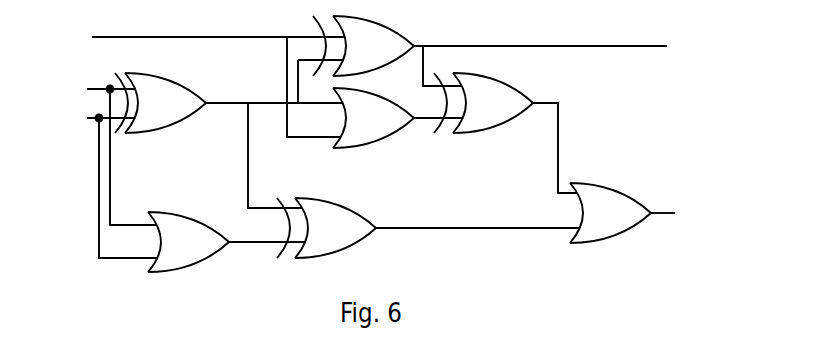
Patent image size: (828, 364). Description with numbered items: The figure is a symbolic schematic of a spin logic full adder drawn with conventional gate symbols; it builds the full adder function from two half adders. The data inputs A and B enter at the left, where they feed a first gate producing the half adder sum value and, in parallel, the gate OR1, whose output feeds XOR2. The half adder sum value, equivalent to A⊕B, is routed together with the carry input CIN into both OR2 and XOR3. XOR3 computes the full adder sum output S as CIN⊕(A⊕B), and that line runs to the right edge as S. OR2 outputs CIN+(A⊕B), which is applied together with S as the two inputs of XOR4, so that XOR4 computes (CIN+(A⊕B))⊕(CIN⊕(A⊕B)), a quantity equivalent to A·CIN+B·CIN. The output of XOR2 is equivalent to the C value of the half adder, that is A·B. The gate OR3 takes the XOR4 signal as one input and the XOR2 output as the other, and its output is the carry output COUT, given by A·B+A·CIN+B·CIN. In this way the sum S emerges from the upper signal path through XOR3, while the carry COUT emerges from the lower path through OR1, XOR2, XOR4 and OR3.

The carry input CIN is at (205, 81).
The input A is at (116, 152).
The input B is at (116, 183).
The OR gate OR2 is at (229, 134).
The XOR gate XOR3 is at (490, 51).
The XOR gate XOR4 is at (505, 133).
The OR gate OR1 is at (226, 242).
The XOR gate XOR2 is at (428, 228).
The OR gate OR3 is at (622, 213).
The sum output S is at (675, 46).
The carry output COUT is at (695, 213).